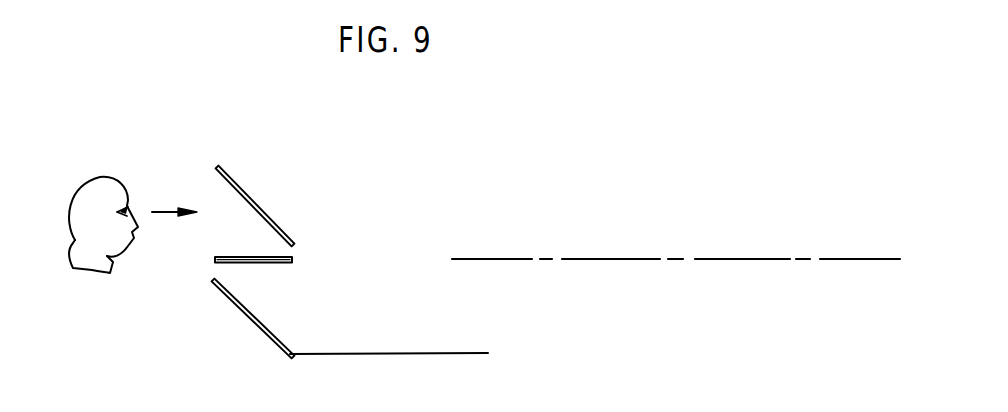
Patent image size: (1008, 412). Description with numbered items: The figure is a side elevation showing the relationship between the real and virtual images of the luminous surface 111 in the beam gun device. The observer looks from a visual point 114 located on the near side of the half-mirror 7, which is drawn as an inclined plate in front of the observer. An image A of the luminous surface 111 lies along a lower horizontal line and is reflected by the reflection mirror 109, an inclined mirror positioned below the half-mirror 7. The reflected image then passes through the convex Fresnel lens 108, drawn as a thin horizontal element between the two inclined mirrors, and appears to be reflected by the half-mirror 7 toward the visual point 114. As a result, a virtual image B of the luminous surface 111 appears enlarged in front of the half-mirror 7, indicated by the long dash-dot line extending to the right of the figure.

The visual point 114 is at (127, 204).
The half-mirror 7 is at (237, 180).
The convex Fresnel lens 108 is at (248, 257).
The reflection mirror 109 is at (243, 315).
The luminous surface 111 is at (452, 354).